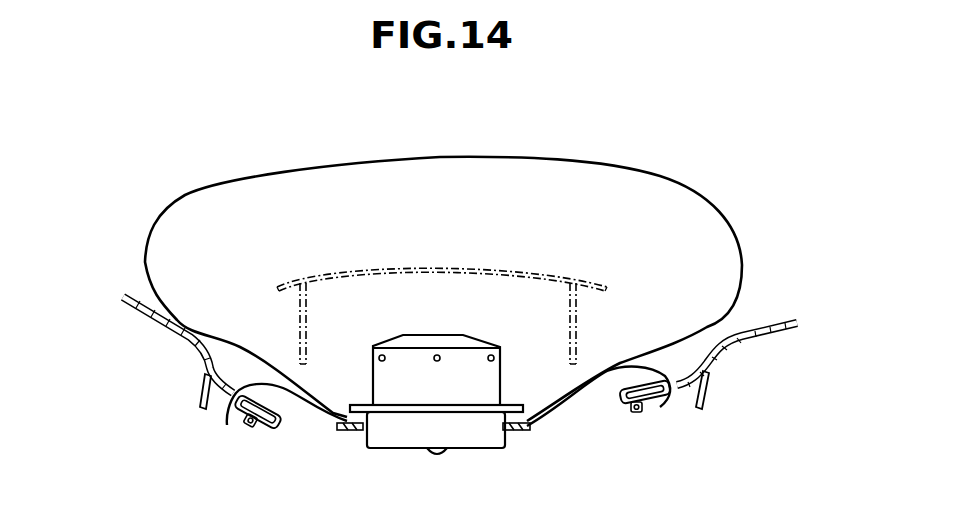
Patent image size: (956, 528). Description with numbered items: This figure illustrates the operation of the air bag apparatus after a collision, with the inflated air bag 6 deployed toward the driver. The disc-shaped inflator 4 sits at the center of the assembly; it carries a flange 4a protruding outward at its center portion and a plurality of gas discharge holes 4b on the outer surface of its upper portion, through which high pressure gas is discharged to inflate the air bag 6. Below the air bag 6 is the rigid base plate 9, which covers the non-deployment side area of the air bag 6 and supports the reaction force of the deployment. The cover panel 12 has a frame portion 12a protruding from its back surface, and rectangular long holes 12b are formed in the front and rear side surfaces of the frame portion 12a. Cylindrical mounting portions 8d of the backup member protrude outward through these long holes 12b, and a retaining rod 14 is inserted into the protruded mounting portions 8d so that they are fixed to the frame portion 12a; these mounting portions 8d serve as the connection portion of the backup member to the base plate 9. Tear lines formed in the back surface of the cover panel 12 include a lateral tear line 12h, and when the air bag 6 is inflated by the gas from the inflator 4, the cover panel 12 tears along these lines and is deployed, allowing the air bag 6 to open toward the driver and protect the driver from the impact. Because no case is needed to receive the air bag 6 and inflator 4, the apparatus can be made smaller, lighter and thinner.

The air bag 6 is at (477, 168).
The cover panel 12 is at (158, 323).
The lateral tear line 12h is at (453, 265).
The frame portion 12a is at (297, 338).
The long holes 12b is at (298, 308).
The cylindrical mounting portions 8d is at (233, 418).
The retaining rod 14 is at (246, 427).
The inflator 4 is at (420, 437).
The flange 4a is at (467, 413).
The gas discharge holes 4b is at (439, 356).
The base plate 9 is at (343, 430).